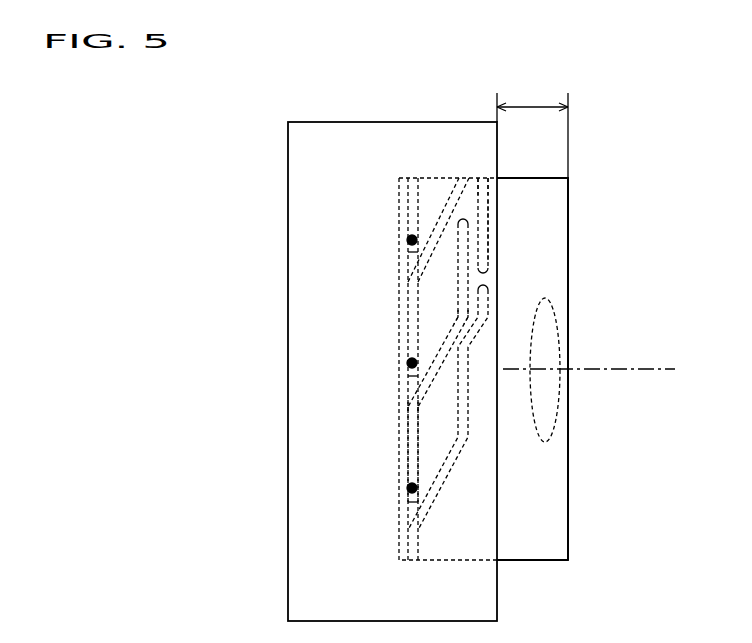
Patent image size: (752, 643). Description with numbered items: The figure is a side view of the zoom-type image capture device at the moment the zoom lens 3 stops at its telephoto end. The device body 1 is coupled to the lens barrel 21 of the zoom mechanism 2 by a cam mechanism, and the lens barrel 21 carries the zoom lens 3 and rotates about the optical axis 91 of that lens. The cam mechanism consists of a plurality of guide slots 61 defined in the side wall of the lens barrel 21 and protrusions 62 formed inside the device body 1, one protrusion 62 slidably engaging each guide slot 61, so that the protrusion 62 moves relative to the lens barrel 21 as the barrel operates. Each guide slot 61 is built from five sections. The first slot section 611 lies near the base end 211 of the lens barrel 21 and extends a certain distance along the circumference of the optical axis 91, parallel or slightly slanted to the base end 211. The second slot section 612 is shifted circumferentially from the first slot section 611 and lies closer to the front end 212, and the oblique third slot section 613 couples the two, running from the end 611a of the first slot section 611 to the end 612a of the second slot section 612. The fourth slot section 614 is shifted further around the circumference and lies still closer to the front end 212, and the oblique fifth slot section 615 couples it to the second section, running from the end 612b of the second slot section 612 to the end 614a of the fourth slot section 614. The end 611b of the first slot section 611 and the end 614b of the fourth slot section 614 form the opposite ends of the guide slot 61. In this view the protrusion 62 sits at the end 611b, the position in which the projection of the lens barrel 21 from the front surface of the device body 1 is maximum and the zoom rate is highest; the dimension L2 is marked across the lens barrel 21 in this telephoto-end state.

The device body 1 is at (471, 122).
The zoom mechanism 2 is at (568, 210).
The lens barrel 21 is at (530, 562).
The base end 211 is at (399, 198).
The front end 212 is at (568, 528).
The zoom lens 3 is at (558, 318).
The optical axis 91 is at (665, 362).
The width dimension L2 is at (532, 125).
The guide slot 61 is at (396, 385).
The first slot section 611 is at (408, 433).
The end of the first slot section 611a is at (397, 402).
The end of the first slot section 611b is at (408, 506).
The second slot section 612 is at (458, 290).
The end of the second slot section 612a is at (446, 306).
The end of the second slot section 612b is at (476, 246).
The third slot section 613 is at (415, 393).
The fourth slot section 614 is at (540, 331).
The end of the fourth slot section 614a is at (474, 180).
The end of the fourth slot section 614b is at (489, 282).
The fifth slot section 615 is at (488, 222).
The protrusion 62 is at (407, 488).